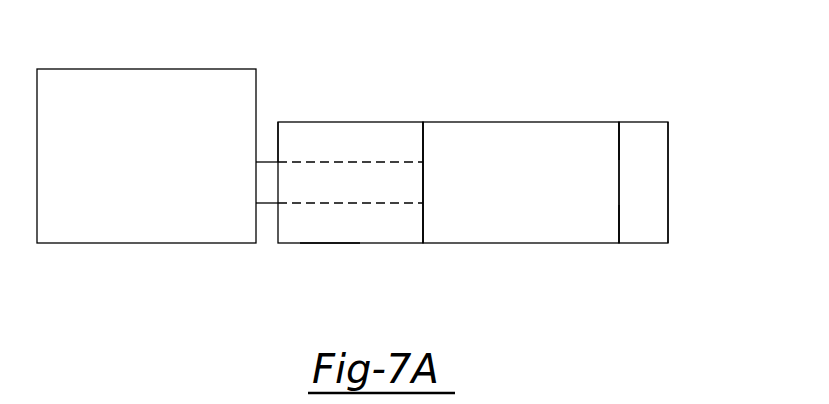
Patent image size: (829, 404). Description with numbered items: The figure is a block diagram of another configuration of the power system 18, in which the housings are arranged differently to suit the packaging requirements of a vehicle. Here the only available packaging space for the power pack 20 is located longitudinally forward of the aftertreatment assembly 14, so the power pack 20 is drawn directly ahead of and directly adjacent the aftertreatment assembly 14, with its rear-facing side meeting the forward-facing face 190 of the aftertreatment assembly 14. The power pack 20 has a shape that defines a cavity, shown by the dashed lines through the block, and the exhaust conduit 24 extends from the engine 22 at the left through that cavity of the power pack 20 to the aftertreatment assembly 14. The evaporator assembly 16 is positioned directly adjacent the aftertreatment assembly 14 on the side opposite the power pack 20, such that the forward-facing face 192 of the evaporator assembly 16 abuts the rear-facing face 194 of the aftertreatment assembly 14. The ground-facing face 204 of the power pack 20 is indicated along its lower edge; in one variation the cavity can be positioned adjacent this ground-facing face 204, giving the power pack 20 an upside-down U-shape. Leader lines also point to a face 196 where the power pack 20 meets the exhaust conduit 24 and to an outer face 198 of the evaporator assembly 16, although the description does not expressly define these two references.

The engine 22 is at (76, 111).
The exhaust conduit 24 is at (268, 205).
The power pack 20 is at (361, 157).
The aftertreatment assembly 14 is at (524, 191).
The evaporator assembly 16 is at (656, 191).
The power system 18 is at (300, 80).
The forward-facing face of the aftertreatment assembly 190 is at (423, 138).
The rear-facing face of the aftertreatment assembly 194 is at (619, 152).
The interface 196 is at (278, 145).
The end face 198 is at (668, 177).
The forward-facing face of the evaporator assembly 192 is at (618, 223).
The ground-facing face of the power pack 204 is at (330, 243).